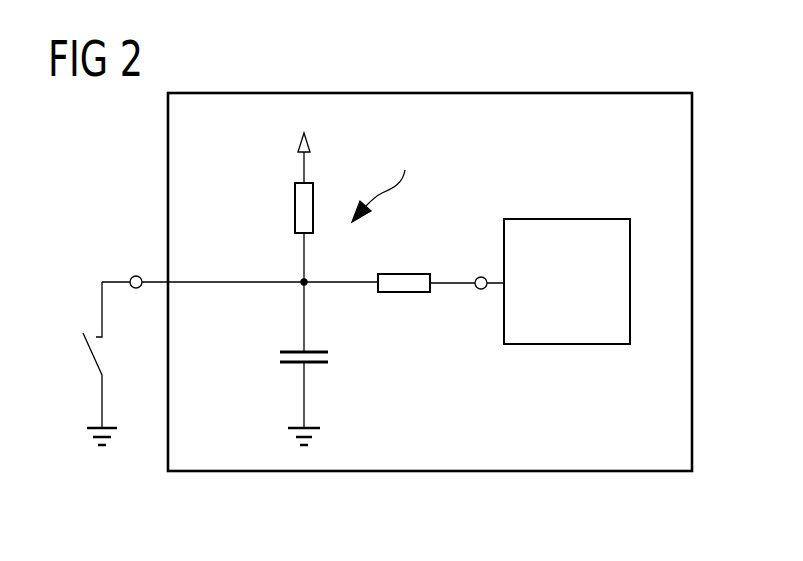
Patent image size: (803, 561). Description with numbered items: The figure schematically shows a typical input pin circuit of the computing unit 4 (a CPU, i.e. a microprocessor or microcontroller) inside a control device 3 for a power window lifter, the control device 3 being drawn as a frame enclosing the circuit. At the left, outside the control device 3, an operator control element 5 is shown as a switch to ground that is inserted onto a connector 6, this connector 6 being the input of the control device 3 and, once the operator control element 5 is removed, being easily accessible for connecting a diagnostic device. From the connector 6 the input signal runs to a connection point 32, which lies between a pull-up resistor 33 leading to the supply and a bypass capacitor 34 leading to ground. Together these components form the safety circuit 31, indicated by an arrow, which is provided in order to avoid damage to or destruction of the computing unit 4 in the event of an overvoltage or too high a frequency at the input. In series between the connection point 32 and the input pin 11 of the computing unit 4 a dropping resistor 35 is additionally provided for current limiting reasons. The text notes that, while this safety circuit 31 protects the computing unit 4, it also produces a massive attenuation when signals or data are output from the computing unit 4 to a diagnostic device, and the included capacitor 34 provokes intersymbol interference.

The control device 3 is at (430, 472).
The computing unit 4 is at (567, 219).
The operator control element 5 is at (92, 355).
The connector 6 is at (136, 276).
The input pin 11 is at (480, 290).
The safety circuit 31 is at (387, 179).
The connection point 32 is at (302, 281).
The pull-up resistor 33 is at (295, 209).
The bypass capacitor 34 is at (280, 356).
The dropping resistor 35 is at (404, 274).